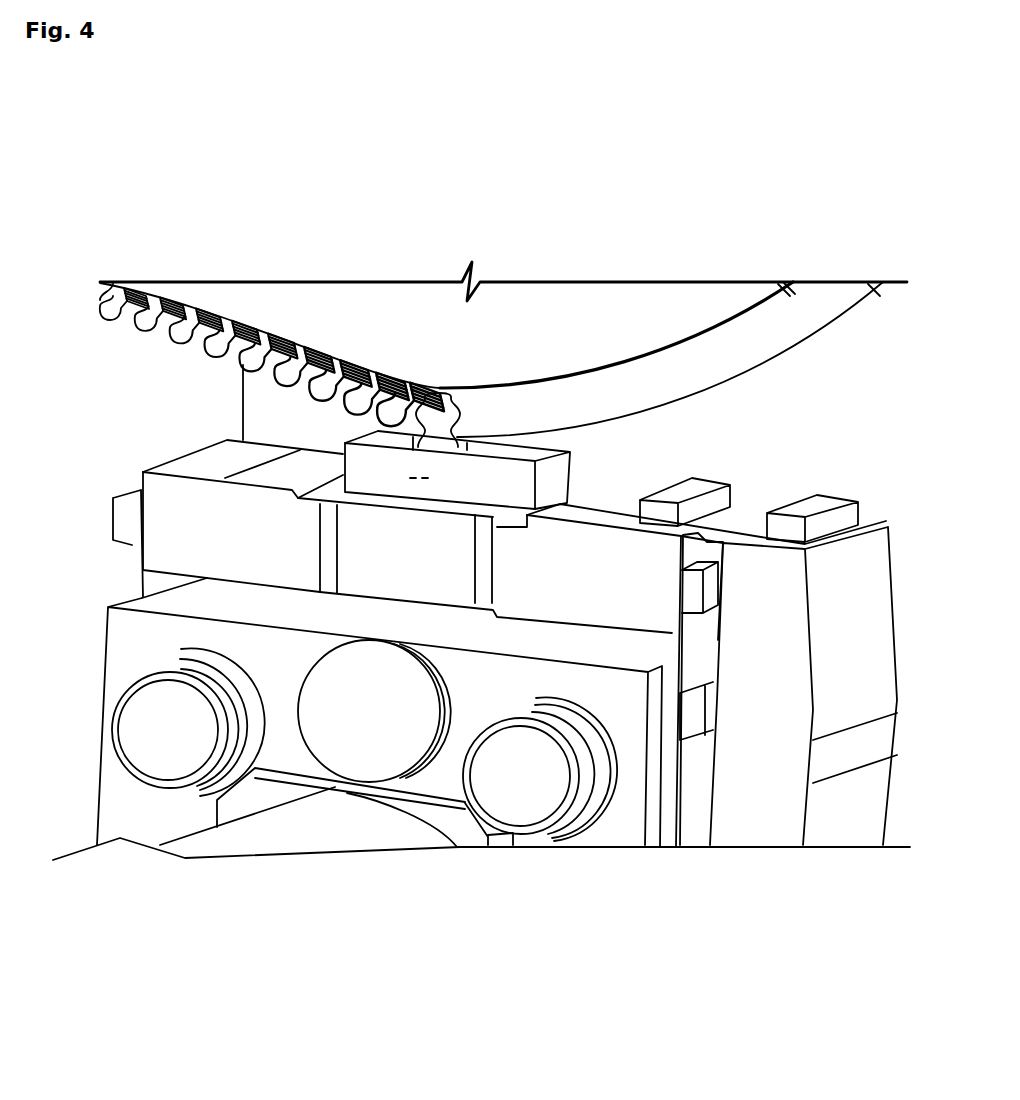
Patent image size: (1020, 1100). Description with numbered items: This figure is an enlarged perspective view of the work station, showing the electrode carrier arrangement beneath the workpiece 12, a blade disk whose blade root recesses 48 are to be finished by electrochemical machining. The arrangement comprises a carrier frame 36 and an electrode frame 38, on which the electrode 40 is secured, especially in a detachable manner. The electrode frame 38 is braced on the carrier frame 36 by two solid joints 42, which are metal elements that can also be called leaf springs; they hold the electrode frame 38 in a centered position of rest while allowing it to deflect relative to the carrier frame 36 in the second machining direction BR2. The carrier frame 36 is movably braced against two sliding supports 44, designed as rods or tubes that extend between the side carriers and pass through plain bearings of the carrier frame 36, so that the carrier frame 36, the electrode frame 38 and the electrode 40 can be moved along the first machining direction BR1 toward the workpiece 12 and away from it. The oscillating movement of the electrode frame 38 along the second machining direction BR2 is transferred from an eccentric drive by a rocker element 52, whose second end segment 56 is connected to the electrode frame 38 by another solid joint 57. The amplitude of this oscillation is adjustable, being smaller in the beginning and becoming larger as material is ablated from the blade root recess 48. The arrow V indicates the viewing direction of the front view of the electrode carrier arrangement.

The workpiece 12 is at (703, 371).
The blade root recess 48 is at (297, 372).
The electrode 40 is at (460, 447).
The electrode frame 38 is at (607, 512).
The solid joints 42 is at (138, 569).
The carrier frame 36 is at (128, 642).
The sliding supports 44 is at (115, 735).
The solid joint 57 is at (735, 523).
The second end segment 56 is at (833, 552).
The rocker element 52 is at (777, 813).
The first machining direction BR1 is at (672, 448).
The second machining direction BR2 is at (735, 432).
The viewing direction arrow V is at (198, 970).